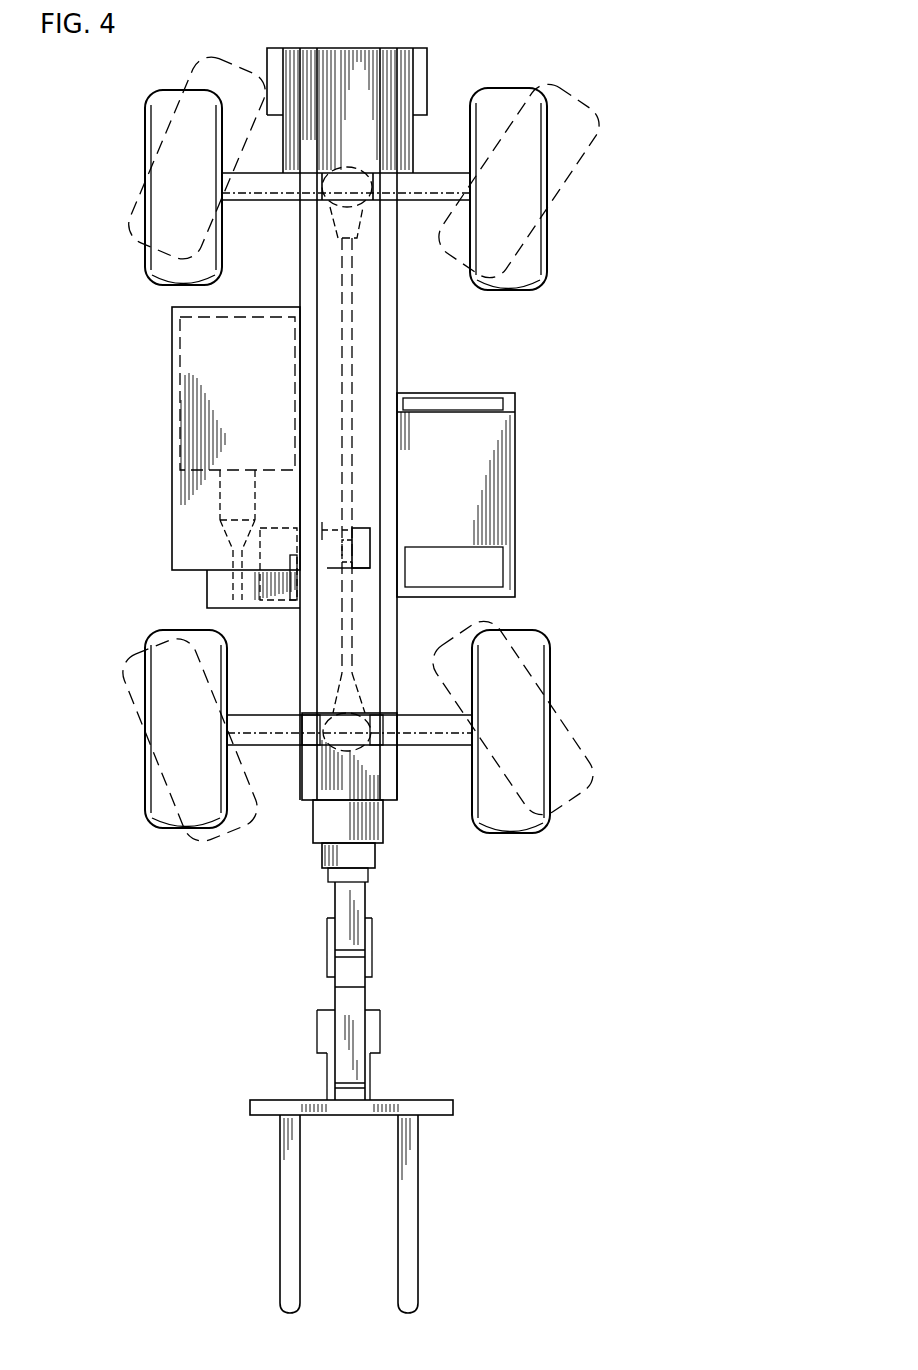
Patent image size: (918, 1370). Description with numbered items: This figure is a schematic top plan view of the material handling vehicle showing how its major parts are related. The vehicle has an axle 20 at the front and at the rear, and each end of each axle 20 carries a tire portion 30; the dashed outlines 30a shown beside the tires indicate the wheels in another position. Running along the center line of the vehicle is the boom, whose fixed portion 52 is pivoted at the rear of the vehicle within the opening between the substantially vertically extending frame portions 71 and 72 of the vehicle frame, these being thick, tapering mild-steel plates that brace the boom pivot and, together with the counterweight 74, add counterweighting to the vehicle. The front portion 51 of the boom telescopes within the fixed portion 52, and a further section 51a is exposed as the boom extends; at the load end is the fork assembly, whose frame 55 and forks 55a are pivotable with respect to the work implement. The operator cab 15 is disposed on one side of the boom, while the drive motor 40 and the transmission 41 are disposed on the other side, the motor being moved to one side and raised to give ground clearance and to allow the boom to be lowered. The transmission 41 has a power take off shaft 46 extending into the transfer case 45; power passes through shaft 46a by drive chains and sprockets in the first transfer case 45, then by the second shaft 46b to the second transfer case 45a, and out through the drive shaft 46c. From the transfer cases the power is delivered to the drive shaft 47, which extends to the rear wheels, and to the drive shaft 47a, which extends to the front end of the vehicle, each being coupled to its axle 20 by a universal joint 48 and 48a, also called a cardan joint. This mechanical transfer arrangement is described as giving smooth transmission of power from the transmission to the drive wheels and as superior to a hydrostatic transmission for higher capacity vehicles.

The operator cab 15 is at (485, 452).
The axle 20 is at (432, 173).
The tire portion 30 is at (173, 197).
The steered wheel position 30a is at (533, 788).
The drive motor 40 is at (210, 363).
The transmission 41 is at (232, 495).
The transfer case 45 is at (212, 598).
The second transfer case 45a is at (323, 528).
The power take off shaft 46 is at (208, 577).
The shaft 46a is at (287, 547).
The second shaft 46b is at (283, 595).
The drive shaft 46c is at (350, 550).
The drive shaft 47 is at (397, 328).
The drive shaft 47a is at (348, 635).
The universal joint 48 is at (335, 220).
The universal joint 48a is at (343, 695).
The front portion of boom 51 is at (365, 852).
The boom section 51a is at (327, 823).
The fixed portion of boom 52 is at (330, 782).
The fork frame 55 is at (402, 1108).
The forks 55a is at (408, 1200).
The frame portion 71 is at (308, 63).
The frame portion 72 is at (390, 62).
The counterweight 74 is at (345, 63).